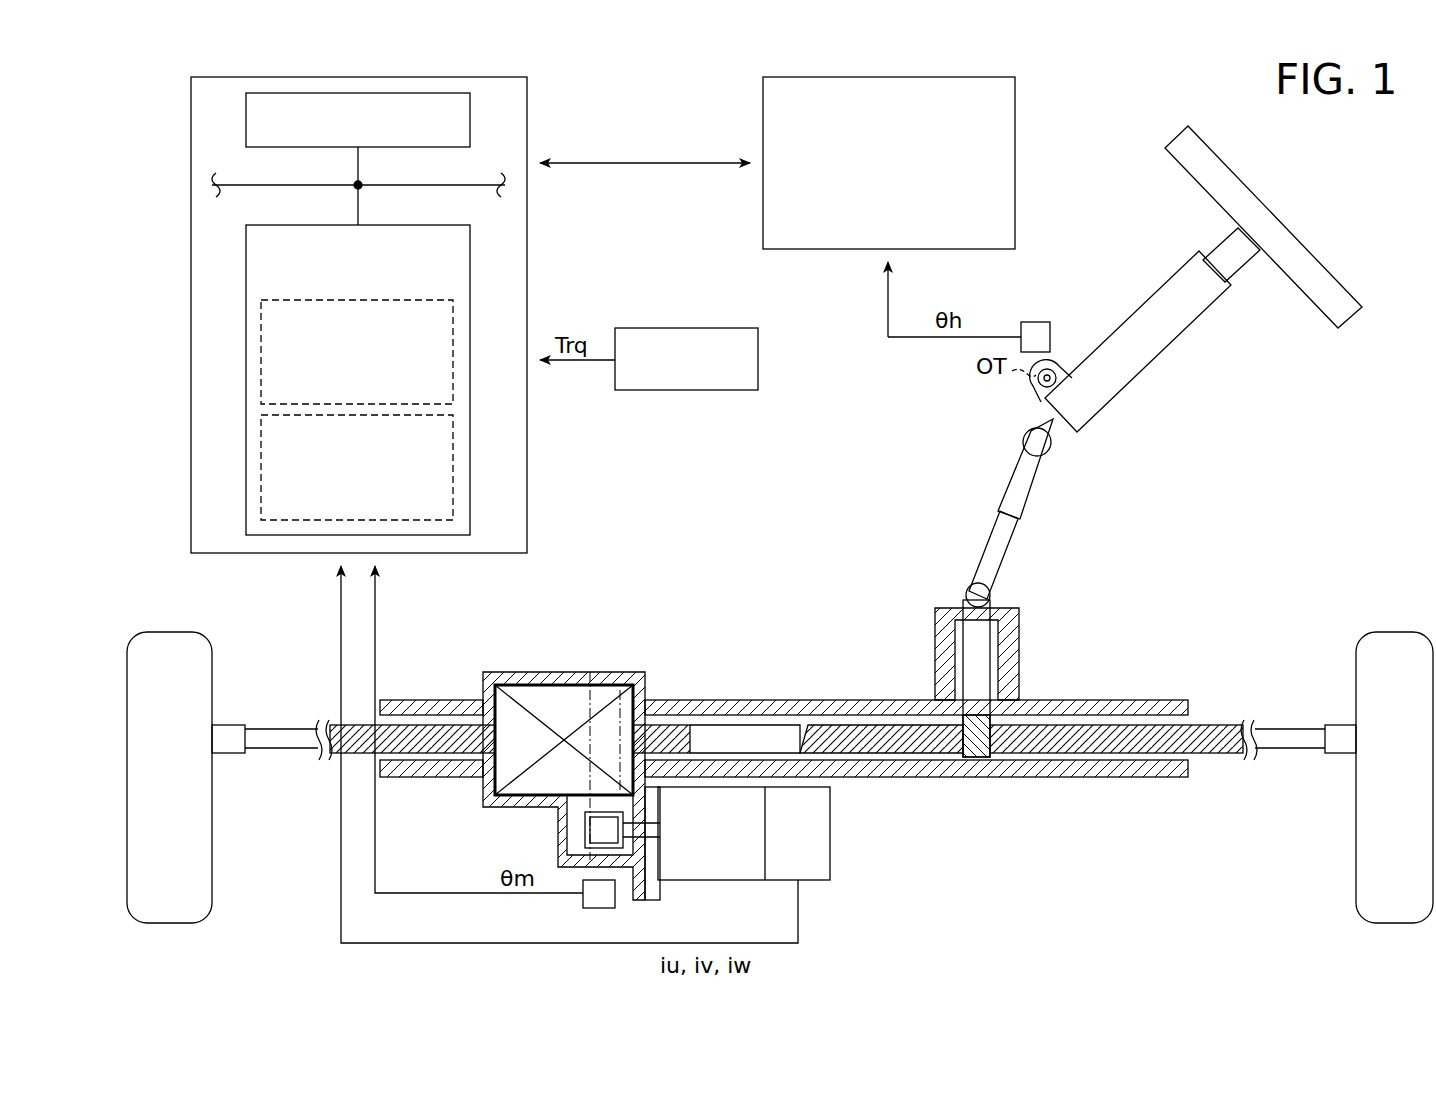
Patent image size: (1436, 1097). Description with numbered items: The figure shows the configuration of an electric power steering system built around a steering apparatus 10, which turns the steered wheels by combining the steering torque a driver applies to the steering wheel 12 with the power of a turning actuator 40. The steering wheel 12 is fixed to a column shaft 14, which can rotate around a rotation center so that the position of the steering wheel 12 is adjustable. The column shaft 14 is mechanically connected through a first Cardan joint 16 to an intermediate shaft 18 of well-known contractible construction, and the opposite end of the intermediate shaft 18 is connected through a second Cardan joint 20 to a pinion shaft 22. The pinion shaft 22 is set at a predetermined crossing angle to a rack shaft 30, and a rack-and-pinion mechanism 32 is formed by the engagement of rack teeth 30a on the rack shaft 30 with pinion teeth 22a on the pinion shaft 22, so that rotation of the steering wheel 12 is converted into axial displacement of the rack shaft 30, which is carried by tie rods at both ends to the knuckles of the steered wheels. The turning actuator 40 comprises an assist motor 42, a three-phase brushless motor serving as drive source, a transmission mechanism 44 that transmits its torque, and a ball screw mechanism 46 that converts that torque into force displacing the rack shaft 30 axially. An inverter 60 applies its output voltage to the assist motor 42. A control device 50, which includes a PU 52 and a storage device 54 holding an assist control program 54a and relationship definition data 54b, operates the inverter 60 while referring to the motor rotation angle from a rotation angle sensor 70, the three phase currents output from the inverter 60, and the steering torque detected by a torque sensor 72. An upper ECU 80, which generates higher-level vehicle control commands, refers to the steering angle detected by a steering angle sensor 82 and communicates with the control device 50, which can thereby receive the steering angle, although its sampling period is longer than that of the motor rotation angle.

The steering apparatus 10 is at (1372, 191).
The steering wheel 12 is at (1242, 175).
The column shaft 14 is at (1165, 287).
The first Cardan joint 16 is at (1051, 447).
The intermediate shaft 18 is at (970, 497).
The second Cardan joint 20 is at (977, 594).
The pinion shaft 22 is at (970, 615).
The pinion teeth 22a is at (980, 760).
The rack shaft 30 is at (766, 719).
The rack teeth 30a is at (905, 740).
The rack-and-pinion mechanism 32 is at (1023, 794).
The turning actuator 40 is at (466, 840).
The assist motor 42 is at (745, 880).
The transmission mechanism 44 is at (583, 800).
The ball screw mechanism 46 is at (492, 780).
The control device 50 is at (527, 92).
The PU 52 is at (376, 150).
The storage device 54 is at (376, 225).
The assist control program 54a is at (453, 342).
The relationship definition data 54b is at (453, 441).
The inverter 60 is at (859, 848).
The rotation angle sensor 70 is at (598, 908).
The torque sensor 72 is at (685, 328).
The upper ECU 80 is at (1015, 92).
The steering angle sensor 82 is at (1037, 322).